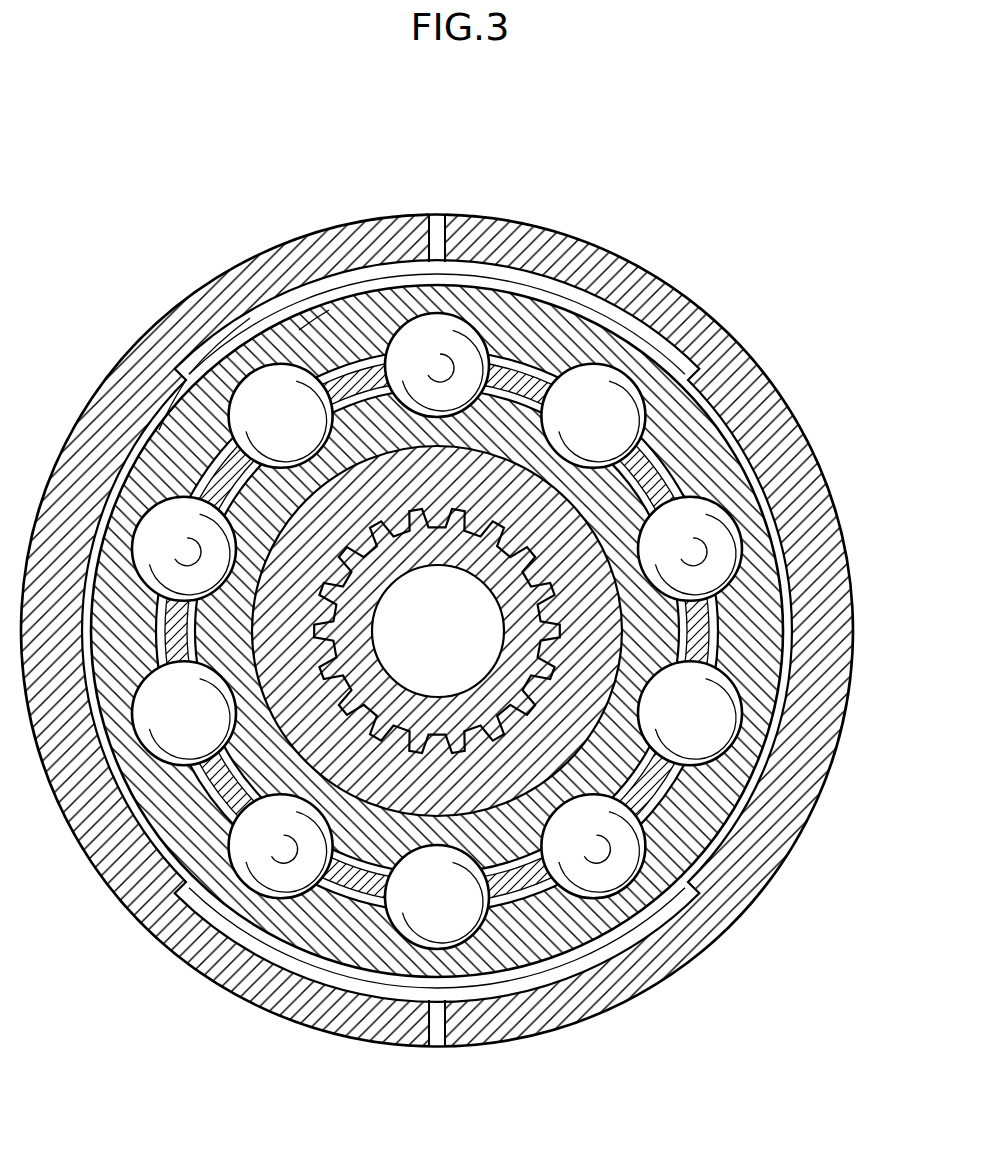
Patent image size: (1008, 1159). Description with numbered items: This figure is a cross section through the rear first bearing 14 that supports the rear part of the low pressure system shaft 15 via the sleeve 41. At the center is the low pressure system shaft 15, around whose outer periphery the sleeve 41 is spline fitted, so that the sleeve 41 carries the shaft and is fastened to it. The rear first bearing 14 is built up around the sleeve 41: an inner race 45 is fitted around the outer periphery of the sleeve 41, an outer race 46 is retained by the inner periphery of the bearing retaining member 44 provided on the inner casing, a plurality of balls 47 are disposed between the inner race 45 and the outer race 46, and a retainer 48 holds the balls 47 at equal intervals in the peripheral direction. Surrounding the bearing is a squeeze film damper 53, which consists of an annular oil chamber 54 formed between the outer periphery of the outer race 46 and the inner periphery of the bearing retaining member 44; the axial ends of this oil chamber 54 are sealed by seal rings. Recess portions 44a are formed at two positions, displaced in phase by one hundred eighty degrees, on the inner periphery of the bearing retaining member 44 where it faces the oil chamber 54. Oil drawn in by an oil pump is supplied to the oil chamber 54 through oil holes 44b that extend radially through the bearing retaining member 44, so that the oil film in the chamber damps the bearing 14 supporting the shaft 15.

The rear first bearing 14 is at (170, 389).
The low pressure system shaft 15 is at (400, 548).
The sleeve 41 is at (519, 728).
The bearing retaining member 44 is at (726, 318).
The recess portion 44a is at (492, 283).
The oil hole 44b is at (436, 232).
The inner race 45 is at (605, 520).
The outer race 46 is at (750, 580).
The ball 47 is at (437, 631).
The retainer 48 is at (530, 368).
The squeeze film damper 53 is at (242, 312).
The oil chamber 54 is at (327, 292).